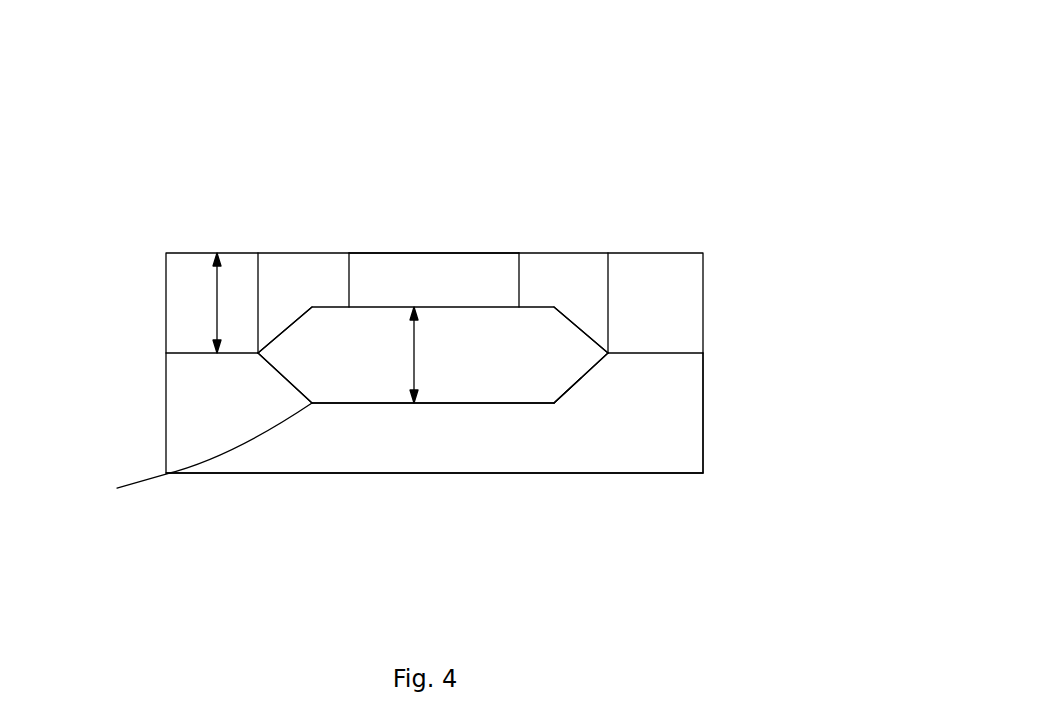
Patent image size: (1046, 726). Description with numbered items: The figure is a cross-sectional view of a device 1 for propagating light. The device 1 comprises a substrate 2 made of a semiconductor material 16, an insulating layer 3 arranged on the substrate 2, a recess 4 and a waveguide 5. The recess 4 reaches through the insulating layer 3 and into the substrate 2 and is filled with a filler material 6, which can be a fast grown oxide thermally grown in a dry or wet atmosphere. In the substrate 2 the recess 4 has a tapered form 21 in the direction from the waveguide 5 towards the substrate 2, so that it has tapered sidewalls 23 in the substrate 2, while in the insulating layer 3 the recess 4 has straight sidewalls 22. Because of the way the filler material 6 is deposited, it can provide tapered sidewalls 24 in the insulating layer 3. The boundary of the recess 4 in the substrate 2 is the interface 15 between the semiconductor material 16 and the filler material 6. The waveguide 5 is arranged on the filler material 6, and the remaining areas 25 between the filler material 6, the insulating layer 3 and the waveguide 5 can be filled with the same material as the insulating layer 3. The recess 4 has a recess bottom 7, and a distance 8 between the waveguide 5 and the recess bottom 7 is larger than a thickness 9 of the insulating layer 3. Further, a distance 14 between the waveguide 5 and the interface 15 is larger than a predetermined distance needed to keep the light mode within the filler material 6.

The device for propagating light 1 is at (697, 177).
The substrate 2 is at (490, 413).
The insulating layer 3 is at (673, 293).
The recess 4 is at (584, 469).
The waveguide 5 is at (492, 258).
The filler material 6 is at (540, 395).
The recess bottom 7 is at (433, 477).
The distance 8 is at (183, 453).
The thickness 9 is at (217, 287).
The distance 14 is at (183, 453).
The interface 15 is at (470, 403).
The semiconductor material 16 is at (676, 405).
The tapered form 21 is at (290, 385).
The straight sidewalls 22 is at (258, 275).
The tapered sidewalls 23 is at (281, 374).
The tapered sidewalls 24 is at (283, 332).
The remaining areas 25 is at (434, 280).